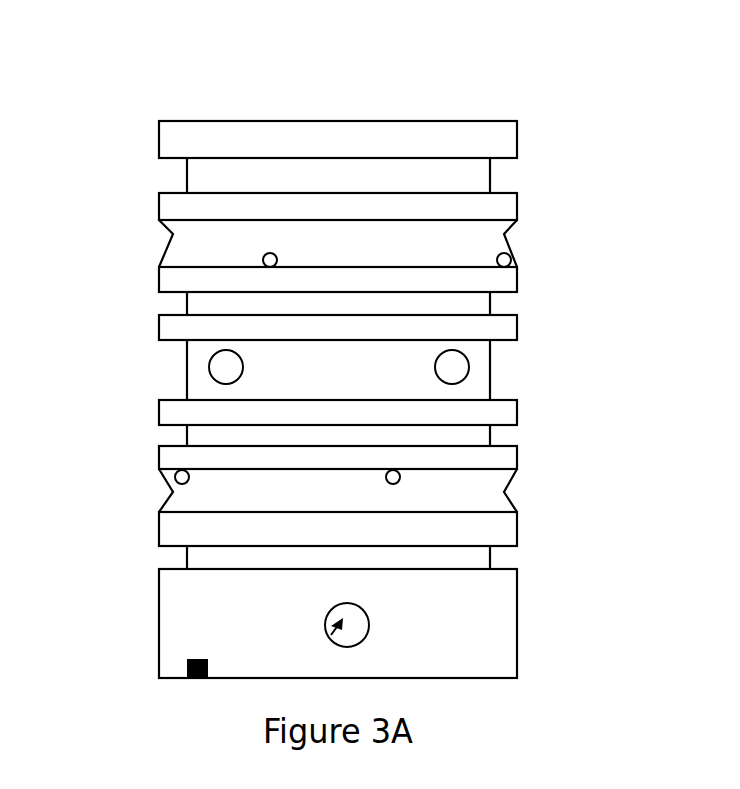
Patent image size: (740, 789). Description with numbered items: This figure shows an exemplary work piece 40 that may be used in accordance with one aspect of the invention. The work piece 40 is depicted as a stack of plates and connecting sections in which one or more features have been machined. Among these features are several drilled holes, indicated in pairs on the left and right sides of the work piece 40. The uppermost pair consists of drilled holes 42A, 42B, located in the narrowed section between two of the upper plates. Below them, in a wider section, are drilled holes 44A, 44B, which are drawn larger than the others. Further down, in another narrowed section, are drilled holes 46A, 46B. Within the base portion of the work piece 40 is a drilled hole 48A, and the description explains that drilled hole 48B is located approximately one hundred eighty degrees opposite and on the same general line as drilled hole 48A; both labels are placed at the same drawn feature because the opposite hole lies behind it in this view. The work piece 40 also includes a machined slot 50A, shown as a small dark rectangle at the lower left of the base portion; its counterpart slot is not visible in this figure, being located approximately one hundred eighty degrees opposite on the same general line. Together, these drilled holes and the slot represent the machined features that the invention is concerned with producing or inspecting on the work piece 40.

The work piece 40 is at (383, 90).
The drilled hole 42A is at (264, 262).
The drilled hole 42B is at (508, 262).
The drilled hole 44A is at (226, 367).
The drilled hole 44B is at (448, 365).
The drilled hole 46A is at (176, 477).
The drilled hole 46B is at (397, 471).
The drilled hole 48A is at (330, 615).
The drilled hole 48B is at (334, 633).
The machined slot 50A is at (195, 672).